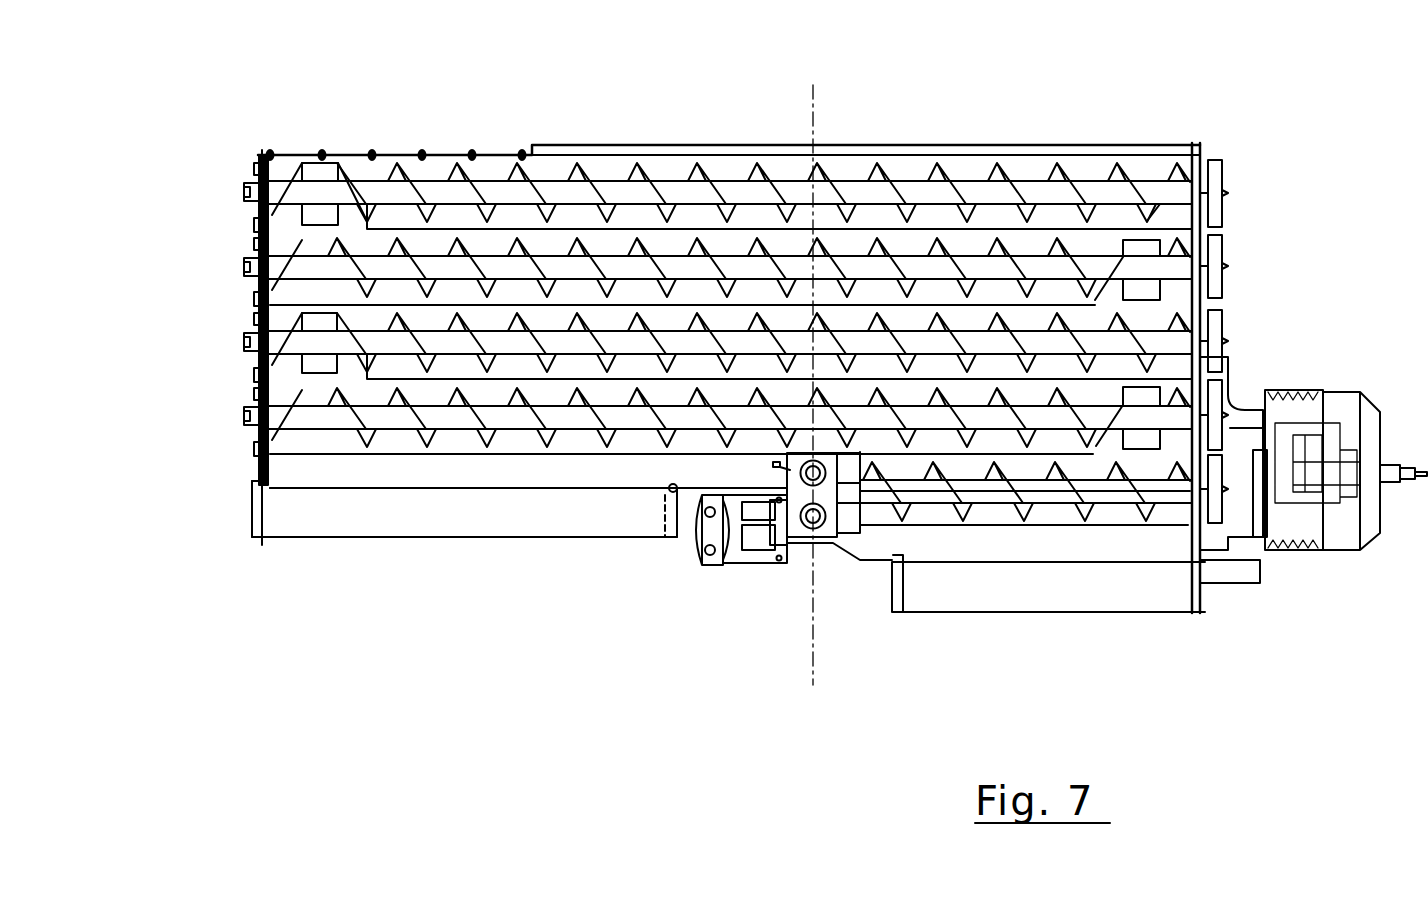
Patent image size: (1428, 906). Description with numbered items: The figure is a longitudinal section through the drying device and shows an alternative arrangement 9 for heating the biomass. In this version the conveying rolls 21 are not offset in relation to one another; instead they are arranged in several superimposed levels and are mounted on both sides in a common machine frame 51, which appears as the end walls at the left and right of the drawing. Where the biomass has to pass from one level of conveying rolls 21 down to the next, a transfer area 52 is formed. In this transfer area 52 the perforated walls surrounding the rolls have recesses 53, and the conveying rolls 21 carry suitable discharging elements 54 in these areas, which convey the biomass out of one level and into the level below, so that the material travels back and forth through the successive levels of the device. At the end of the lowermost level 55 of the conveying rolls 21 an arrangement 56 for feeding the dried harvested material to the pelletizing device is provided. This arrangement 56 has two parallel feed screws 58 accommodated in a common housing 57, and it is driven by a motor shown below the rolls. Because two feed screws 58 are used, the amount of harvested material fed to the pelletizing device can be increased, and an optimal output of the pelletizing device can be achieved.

The arrangement for heating the biomass 9 is at (858, 135).
The conveying rolls 21 is at (288, 413).
The common machine frame 51 is at (260, 160).
The transfer area 52 is at (360, 218).
The recesses 53 is at (350, 188).
The discharging elements 54 is at (312, 345).
The lowermost level 55 is at (1050, 490).
The arrangement for feeding the dried harvested material 56 is at (797, 549).
The common housing 57 is at (818, 545).
The feed screws 58 is at (788, 468).